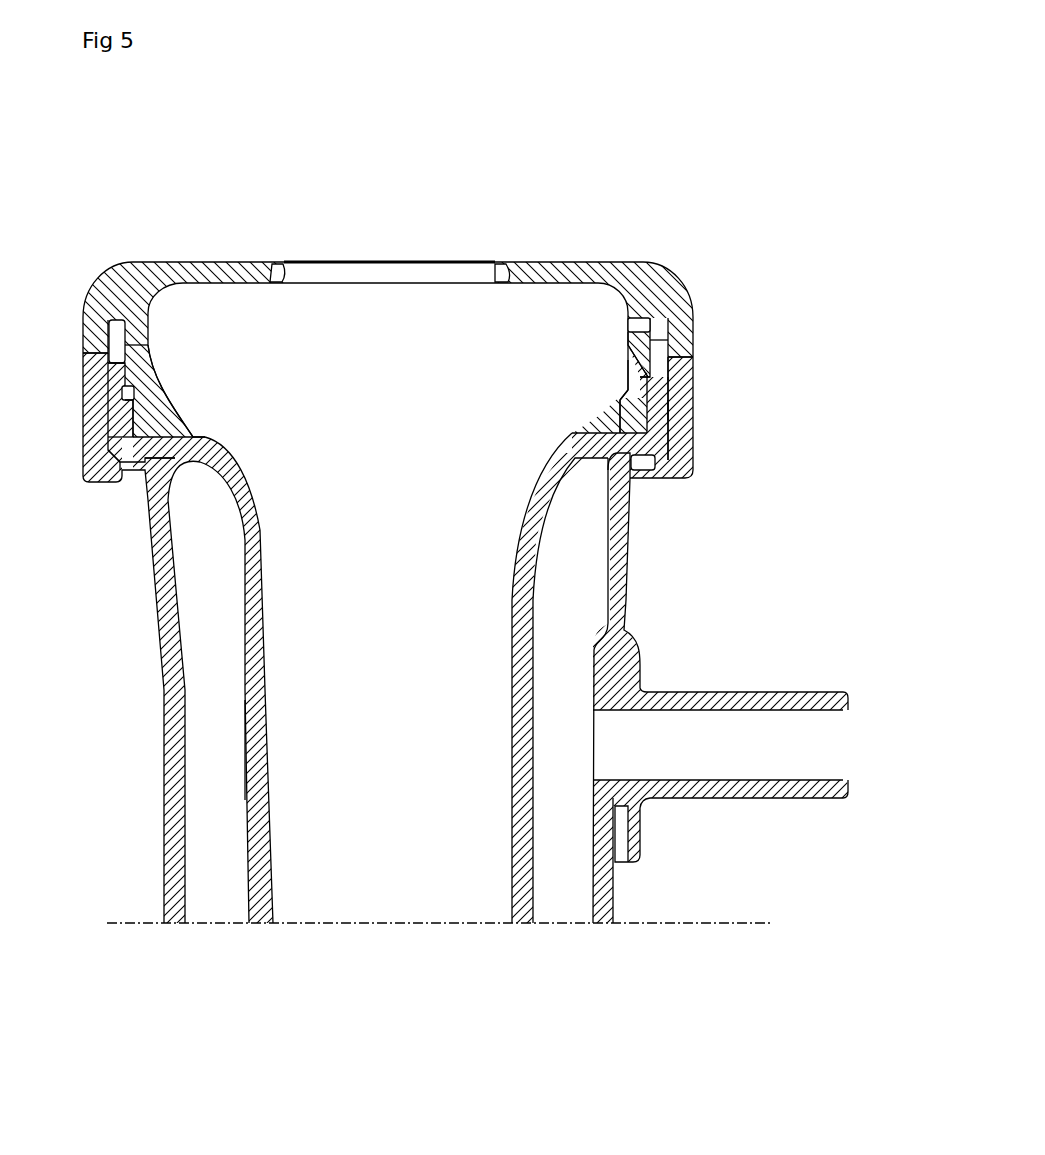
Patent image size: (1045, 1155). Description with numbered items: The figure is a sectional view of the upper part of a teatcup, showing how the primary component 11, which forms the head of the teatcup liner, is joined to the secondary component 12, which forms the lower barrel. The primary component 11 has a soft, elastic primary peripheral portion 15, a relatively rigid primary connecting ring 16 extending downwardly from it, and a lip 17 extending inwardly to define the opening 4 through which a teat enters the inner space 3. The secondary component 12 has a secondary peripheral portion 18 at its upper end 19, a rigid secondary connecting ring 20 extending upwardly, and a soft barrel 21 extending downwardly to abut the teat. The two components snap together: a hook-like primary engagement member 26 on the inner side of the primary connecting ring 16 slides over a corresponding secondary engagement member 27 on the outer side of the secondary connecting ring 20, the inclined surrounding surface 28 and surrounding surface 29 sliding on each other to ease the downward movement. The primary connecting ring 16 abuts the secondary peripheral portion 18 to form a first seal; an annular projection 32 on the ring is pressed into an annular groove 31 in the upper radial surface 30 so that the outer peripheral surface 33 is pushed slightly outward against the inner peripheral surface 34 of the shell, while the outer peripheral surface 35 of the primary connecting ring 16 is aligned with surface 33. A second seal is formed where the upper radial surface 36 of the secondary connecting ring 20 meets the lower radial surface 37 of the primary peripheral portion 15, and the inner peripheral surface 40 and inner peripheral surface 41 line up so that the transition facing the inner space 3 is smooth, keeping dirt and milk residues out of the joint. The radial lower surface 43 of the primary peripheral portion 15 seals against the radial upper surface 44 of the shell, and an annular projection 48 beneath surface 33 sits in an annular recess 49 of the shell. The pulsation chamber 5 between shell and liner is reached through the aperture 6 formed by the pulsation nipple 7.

The inner space 3 is at (380, 785).
The opening 4 is at (345, 275).
The pulsation chamber 5 is at (544, 863).
The aperture 6 is at (600, 738).
The pulsation nipple 7 is at (713, 692).
The primary component 11 is at (103, 272).
The secondary component 12 is at (243, 622).
The primary peripheral portion 15 is at (107, 318).
The primary connecting ring 16 is at (117, 353).
The lip 17 is at (275, 268).
The secondary peripheral portion 18 is at (110, 452).
The upper end 19 is at (172, 385).
The secondary connecting ring 20 is at (160, 415).
The barrel 21 is at (257, 752).
The primary engagement member 26 is at (625, 383).
The secondary engagement member 27 is at (648, 378).
The surrounding surface 28 is at (620, 398).
The surrounding surface 29 is at (657, 350).
The upper substantially radial surface 30 is at (113, 398).
The annular groove 31 is at (120, 408).
The annular projection 32 is at (123, 403).
The outer peripheral surface 33 is at (118, 420).
The inner peripheral surface 34 is at (115, 365).
The outer peripheral surface 35 is at (667, 355).
The upper substantially radial surface 36 is at (138, 347).
The lower substantially radial surface 37 is at (630, 348).
The inner peripheral surface 40 is at (628, 324).
The inner peripheral surface 41 is at (625, 368).
The substantially radial lower surface 43 is at (682, 356).
The substantially radial upper surface 44 is at (680, 357).
The annular projection 48 is at (643, 462).
The annular recess 49 is at (150, 457).